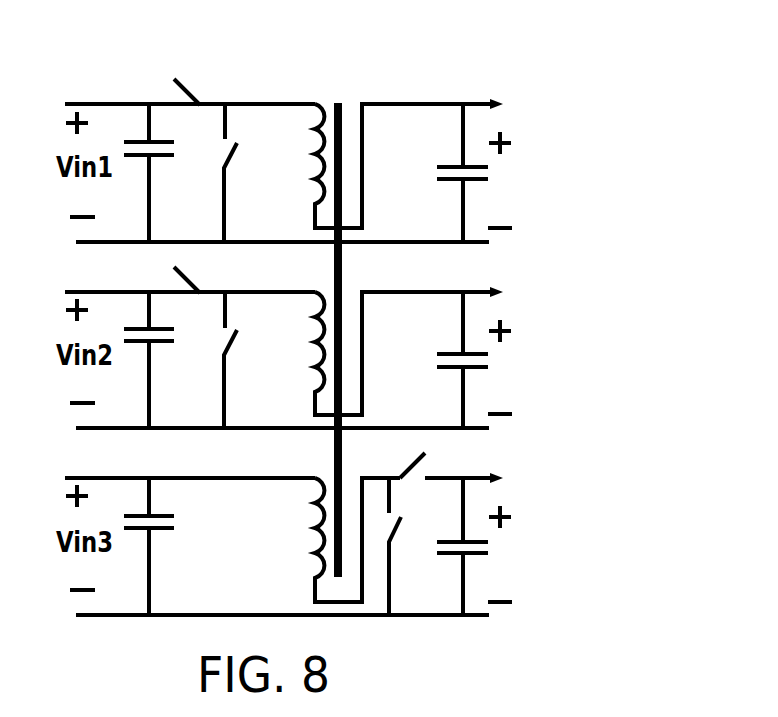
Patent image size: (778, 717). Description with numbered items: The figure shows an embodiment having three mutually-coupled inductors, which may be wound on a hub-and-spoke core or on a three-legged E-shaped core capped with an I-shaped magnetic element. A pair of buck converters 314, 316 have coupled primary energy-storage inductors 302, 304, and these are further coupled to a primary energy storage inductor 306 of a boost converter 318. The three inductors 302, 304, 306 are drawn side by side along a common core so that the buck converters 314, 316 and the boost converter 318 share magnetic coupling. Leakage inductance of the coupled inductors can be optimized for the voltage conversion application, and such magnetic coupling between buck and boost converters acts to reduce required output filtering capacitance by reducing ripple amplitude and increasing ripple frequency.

The primary energy-storage inductor 302 is at (317, 102).
The primary energy-storage inductor 304 is at (320, 302).
The primary energy storage inductor 306 is at (320, 490).
The buck converter 314 is at (554, 144).
The buck converter 316 is at (553, 293).
The boost converter 318 is at (545, 587).